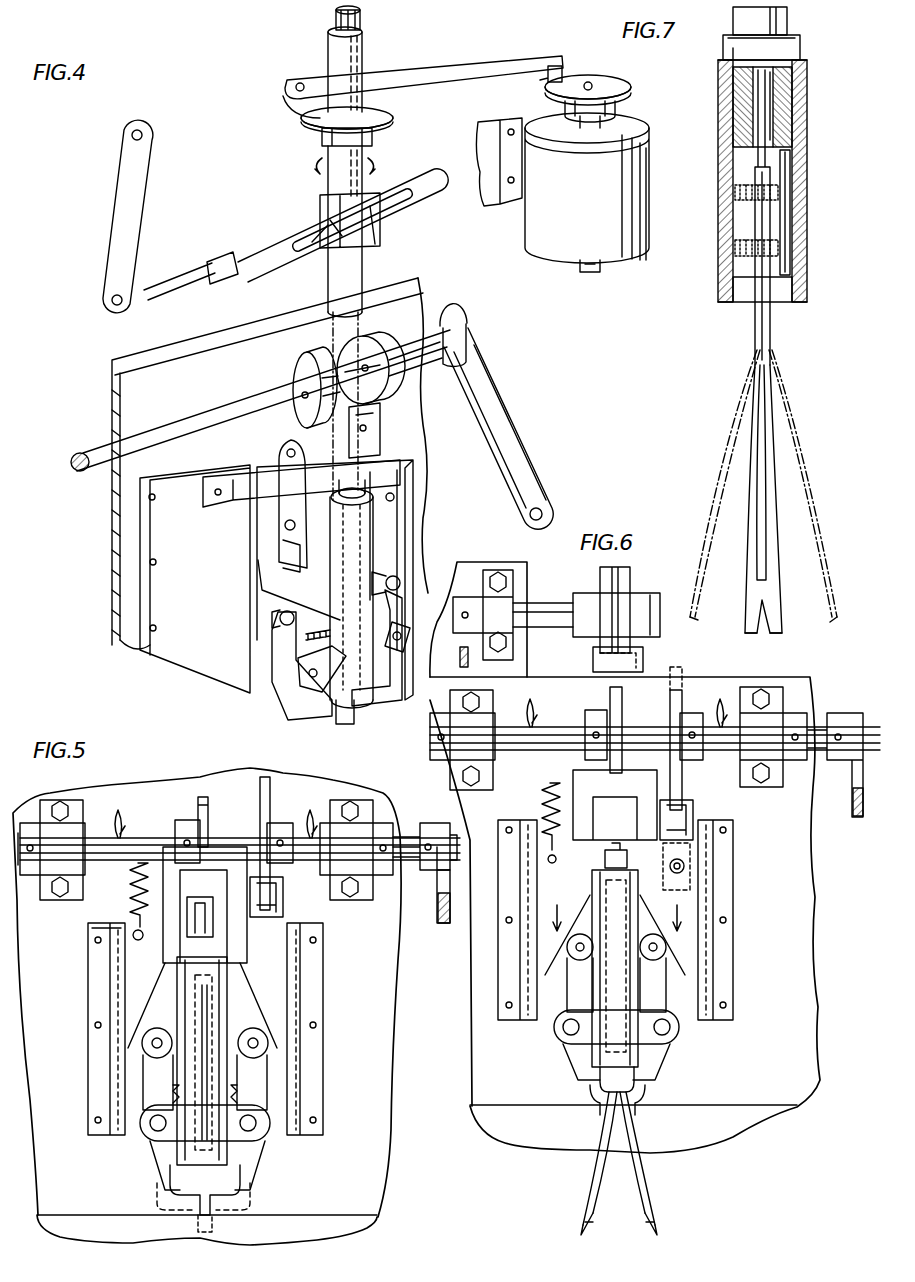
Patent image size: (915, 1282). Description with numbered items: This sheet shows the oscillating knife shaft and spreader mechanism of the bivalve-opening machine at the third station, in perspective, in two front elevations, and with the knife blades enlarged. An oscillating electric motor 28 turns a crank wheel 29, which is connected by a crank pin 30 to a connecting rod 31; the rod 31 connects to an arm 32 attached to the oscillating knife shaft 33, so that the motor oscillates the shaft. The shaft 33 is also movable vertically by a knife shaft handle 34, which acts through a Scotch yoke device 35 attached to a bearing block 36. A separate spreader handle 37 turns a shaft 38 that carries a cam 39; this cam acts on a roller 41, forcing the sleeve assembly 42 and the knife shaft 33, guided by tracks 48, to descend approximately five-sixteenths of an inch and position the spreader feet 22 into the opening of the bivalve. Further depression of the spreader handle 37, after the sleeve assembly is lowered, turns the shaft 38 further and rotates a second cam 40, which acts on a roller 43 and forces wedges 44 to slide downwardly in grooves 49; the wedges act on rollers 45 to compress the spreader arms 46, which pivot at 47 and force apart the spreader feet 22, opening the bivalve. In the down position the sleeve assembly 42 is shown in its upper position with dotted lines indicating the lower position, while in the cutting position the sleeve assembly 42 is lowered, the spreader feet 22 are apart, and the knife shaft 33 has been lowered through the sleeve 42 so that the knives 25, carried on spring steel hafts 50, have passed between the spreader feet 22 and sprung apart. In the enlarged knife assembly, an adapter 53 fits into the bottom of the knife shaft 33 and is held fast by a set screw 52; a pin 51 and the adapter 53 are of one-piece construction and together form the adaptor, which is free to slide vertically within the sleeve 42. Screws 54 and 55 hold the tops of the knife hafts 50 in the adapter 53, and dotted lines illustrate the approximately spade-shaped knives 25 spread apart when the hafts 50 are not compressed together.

In FIG. 4, the spreader feet 22 is at (356, 713).
In FIG. 5, the spreader feet 22 is at (240, 1200).
In FIG. 6, the spreader feet 22 is at (637, 1108).
In FIG. 6, the knives 25 is at (583, 1222).
In FIG. 7, the knives 25 is at (775, 616).
In FIG. 4, the oscillating electric motor 28 is at (602, 209).
In FIG. 4, the crank wheel 29 is at (612, 82).
In FIG. 4, the crank pin 30 is at (543, 81).
In FIG. 4, the connecting rod 31 is at (470, 60).
In FIG. 4, the arm 32 is at (362, 18).
In FIG. 4, the oscillating knife shaft 33 is at (378, 509).
In FIG. 5, the oscillating knife shaft 33 is at (213, 960).
In FIG. 6, the oscillating knife shaft 33 is at (622, 580).
In FIG. 7, the oscillating knife shaft 33 is at (789, 15).
In FIG. 4, the knife shaft handle 34 is at (132, 198).
In FIG. 6, the knife shaft handle 34 is at (470, 658).
In FIG. 4, the Scotch yoke device 35 is at (311, 257).
In FIG. 6, the Scotch yoke device 35 is at (642, 667).
In FIG. 4, the bearing block 36 is at (372, 236).
In FIG. 6, the bearing block 36 is at (614, 666).
In FIG. 4, the spreader handle 37 is at (487, 407).
In FIG. 5, the spreader handle 37 is at (437, 908).
In FIG. 6, the spreader handle 37 is at (865, 800).
In FIG. 4, the shaft 38 is at (438, 322).
In FIG. 5, the shaft 38 is at (408, 838).
In FIG. 4, the cam 39 is at (304, 368).
In FIG. 5, the cam 39 is at (210, 800).
In FIG. 6, the cam 39 is at (623, 720).
In FIG. 4, the cam 40 is at (377, 352).
In FIG. 5, the cam 40 is at (270, 787).
In FIG. 4, the roller 41 is at (285, 444).
In FIG. 5, the roller 41 is at (195, 928).
In FIG. 4, the sleeve assembly 42 is at (354, 591).
In FIG. 5, the sleeve assembly 42 is at (222, 1153).
In FIG. 6, the sleeve assembly 42 is at (640, 1036).
In FIG. 7, the sleeve assembly 42 is at (790, 55).
In FIG. 4, the roller 43 is at (381, 414).
In FIG. 5, the roller 43 is at (270, 892).
In FIG. 6, the roller 43 is at (684, 808).
In FIG. 4, the wedges 44 is at (400, 544).
In FIG. 5, the wedges 44 is at (167, 968).
In FIG. 6, the wedges 44 is at (690, 896).
In FIG. 4, the rollers 45 is at (386, 570).
In FIG. 5, the rollers 45 is at (165, 1012).
In FIG. 6, the rollers 45 is at (667, 946).
In FIG. 4, the spreader arms 46 is at (385, 610).
In FIG. 5, the spreader arms 46 is at (150, 1068).
In FIG. 4, the pivot 47 is at (393, 637).
In FIG. 5, the pivot 47 is at (157, 1136).
In FIG. 6, the pivot 47 is at (568, 1032).
In FIG. 4, the tracks 48 is at (218, 476).
In FIG. 5, the grooves 49 is at (110, 955).
In FIG. 6, the spring steel hafts 50 is at (640, 1178).
In FIG. 7, the spring steel hafts 50 is at (772, 320).
In FIG. 7, the pin 51 is at (782, 110).
In FIG. 7, the set screw 52 is at (745, 114).
In FIG. 7, the adapter 53 is at (791, 155).
In FIG. 7, the screw 54 is at (735, 194).
In FIG. 7, the screw 55 is at (735, 249).